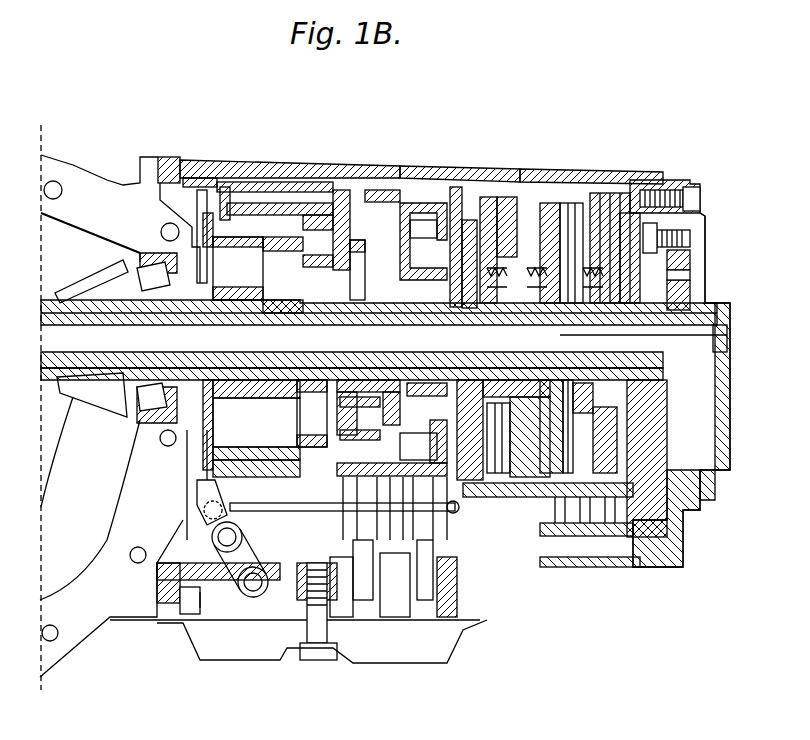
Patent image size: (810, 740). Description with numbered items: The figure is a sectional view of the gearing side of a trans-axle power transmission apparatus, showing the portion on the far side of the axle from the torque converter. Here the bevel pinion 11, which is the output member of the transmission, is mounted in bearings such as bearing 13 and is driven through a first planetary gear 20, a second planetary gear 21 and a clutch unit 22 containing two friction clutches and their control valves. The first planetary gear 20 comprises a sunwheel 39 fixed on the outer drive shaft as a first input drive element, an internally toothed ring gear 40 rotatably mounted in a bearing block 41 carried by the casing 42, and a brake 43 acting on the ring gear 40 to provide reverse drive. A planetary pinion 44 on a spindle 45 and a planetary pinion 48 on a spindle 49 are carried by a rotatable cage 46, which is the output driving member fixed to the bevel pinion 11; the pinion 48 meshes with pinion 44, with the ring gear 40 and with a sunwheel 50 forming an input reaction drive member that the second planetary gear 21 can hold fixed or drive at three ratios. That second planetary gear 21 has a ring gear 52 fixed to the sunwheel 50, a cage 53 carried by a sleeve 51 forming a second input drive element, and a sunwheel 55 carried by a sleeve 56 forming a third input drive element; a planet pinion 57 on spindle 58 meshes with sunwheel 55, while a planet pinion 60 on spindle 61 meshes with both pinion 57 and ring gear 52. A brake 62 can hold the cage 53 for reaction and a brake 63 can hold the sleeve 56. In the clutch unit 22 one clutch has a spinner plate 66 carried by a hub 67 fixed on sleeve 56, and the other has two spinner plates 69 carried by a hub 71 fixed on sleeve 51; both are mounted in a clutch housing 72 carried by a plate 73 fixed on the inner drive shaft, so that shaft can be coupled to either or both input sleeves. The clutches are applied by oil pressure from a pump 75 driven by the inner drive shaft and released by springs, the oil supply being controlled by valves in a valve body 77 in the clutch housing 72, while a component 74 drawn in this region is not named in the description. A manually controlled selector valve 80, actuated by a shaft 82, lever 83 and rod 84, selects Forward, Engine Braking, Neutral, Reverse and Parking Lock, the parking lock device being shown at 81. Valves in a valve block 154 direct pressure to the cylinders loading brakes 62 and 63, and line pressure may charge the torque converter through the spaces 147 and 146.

The bevel pinion 11 is at (105, 405).
The bearing 13 is at (138, 400).
The first planetary gear 20 is at (262, 166).
The second planetary gear 21 is at (450, 168).
The clutch unit 22 is at (574, 172).
The sunwheel 39 is at (220, 318).
The ring gear 40 is at (318, 213).
The bearing block 41 is at (340, 215).
The casing 42 is at (402, 204).
The brake 43 is at (297, 203).
The planetary pinion 44 is at (228, 235).
The spindle 45 is at (238, 268).
The cage 46 is at (203, 188).
The planetary pinion 48 is at (240, 400).
The spindle 49 is at (205, 455).
The sunwheel 50 is at (278, 354).
The sleeve 51 is at (388, 390).
The ring gear 52 is at (422, 229).
The cage 53 is at (360, 268).
The sunwheel 55 is at (352, 390).
The sleeve 56 is at (408, 382).
The planet pinion 57 is at (335, 380).
The spindle 58 is at (453, 200).
The planet pinion 60 is at (418, 446).
The spindle 61 is at (312, 418).
The brake 62 is at (390, 192).
The brake 63 is at (468, 222).
The spinner plate 66 is at (488, 198).
The hub 67 is at (515, 392).
The spinner plates 69 is at (600, 195).
The hub 71 is at (690, 235).
The clutch housing 72 is at (548, 203).
The plate 73 is at (660, 188).
The cover 74 is at (690, 258).
The pump 75 is at (690, 276).
The valve body 77 is at (535, 265).
The selector valve 80 is at (455, 514).
The parking lock device 81 is at (200, 508).
The shaft 82 is at (258, 611).
The lever 83 is at (245, 555).
The rod 84 is at (332, 503).
The space 146 is at (712, 470).
The space 147 is at (590, 352).
The valve block 154 is at (630, 567).